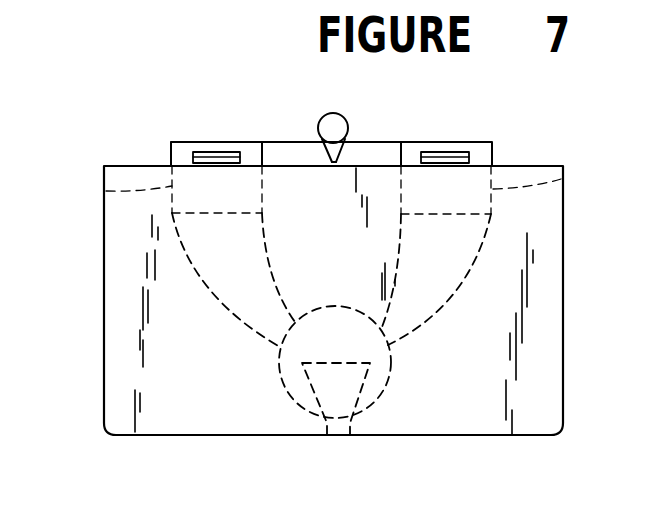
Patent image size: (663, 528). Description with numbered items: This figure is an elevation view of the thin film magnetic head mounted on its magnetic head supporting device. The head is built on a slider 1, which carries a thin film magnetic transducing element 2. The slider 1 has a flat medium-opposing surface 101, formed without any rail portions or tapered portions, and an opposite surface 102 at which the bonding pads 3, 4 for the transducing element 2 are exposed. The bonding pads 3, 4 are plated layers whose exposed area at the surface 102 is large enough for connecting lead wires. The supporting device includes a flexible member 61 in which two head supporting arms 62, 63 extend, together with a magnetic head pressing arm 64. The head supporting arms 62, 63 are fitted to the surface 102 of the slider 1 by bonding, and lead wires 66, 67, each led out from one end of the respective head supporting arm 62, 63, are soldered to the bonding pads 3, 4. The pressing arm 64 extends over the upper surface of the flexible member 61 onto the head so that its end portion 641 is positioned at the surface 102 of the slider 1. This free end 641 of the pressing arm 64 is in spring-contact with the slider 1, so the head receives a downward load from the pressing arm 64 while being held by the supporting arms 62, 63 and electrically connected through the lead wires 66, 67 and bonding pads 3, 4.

The slider 1 is at (104, 328).
The thin film magnetic transducing element 2 is at (390, 385).
The bonding pad 3 is at (106, 190).
The bonding pad 4 is at (561, 179).
The flexible member 61 is at (270, 142).
The head supporting arm 62 is at (171, 142).
The head supporting arm 63 is at (474, 142).
The magnetic head pressing arm 64 is at (320, 118).
The end portion of the magnetic head pressing arm 641 is at (338, 160).
The lead wire 66 is at (213, 155).
The lead wire 67 is at (443, 155).
The medium-opposing surface 101 is at (298, 440).
The surface of the slider 102 is at (536, 162).